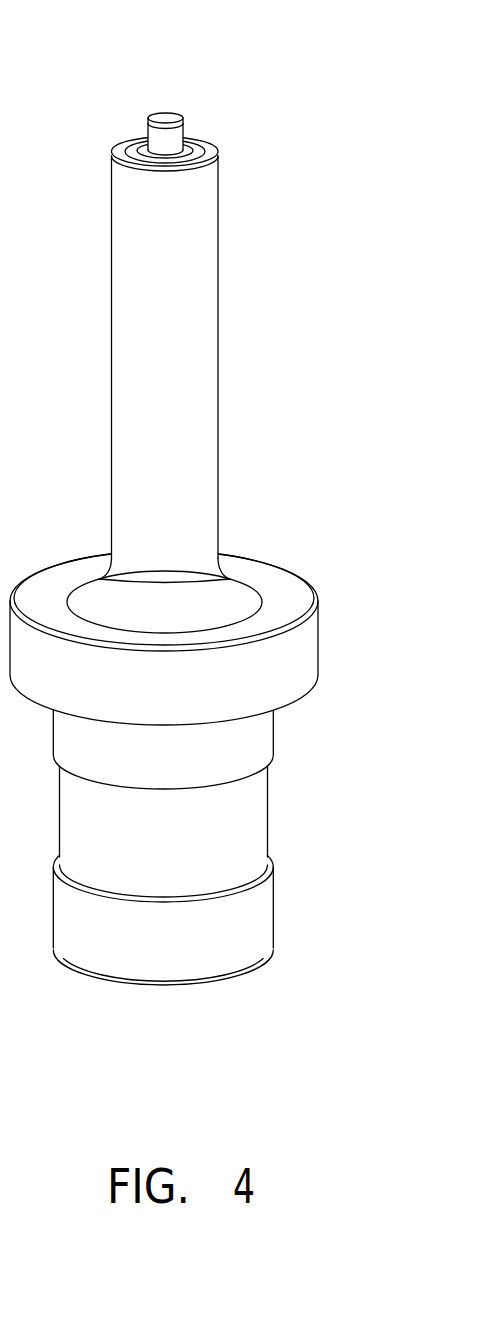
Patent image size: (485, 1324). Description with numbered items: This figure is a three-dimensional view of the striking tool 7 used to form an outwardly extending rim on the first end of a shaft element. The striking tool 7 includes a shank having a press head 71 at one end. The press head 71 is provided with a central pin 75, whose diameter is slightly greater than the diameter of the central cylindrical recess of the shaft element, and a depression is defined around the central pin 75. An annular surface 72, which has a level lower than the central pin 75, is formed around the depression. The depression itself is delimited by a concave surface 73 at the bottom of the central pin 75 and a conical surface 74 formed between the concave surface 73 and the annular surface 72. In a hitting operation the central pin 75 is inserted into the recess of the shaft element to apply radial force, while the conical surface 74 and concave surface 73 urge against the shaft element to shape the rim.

The striking tool 7 is at (310, 642).
The press head 71 is at (207, 172).
The annular surface 72 is at (212, 145).
The concave surface 73 is at (148, 152).
The conical surface 74 is at (192, 142).
The central pin 75 is at (167, 118).